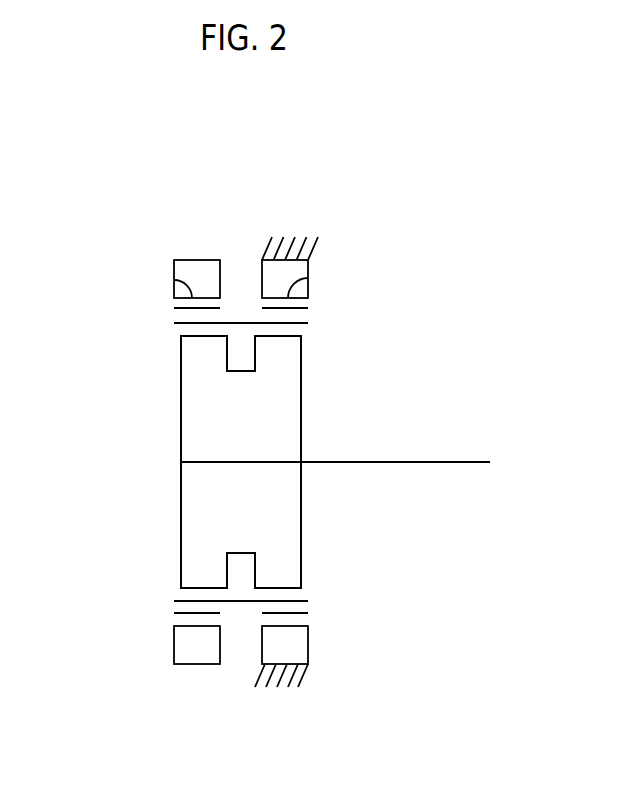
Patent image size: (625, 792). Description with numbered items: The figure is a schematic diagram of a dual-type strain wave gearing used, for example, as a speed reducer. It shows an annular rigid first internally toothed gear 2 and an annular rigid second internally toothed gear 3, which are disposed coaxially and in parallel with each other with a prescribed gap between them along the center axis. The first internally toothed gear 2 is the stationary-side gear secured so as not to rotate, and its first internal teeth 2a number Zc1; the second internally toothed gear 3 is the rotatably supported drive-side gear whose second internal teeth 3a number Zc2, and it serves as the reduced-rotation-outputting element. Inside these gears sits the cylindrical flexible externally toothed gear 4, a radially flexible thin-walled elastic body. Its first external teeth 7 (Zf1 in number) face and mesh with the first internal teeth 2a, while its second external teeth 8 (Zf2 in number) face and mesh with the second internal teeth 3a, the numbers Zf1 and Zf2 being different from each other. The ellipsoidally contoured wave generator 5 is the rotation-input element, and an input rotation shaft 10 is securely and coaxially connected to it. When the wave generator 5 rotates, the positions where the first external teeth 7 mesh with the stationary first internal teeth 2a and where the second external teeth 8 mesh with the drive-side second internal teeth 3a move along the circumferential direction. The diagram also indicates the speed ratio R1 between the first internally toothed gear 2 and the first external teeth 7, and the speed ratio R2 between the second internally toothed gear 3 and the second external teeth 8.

The first internally toothed gear 2 is at (318, 257).
The second internally toothed gear 3 is at (165, 260).
The first internal teeth 2a is at (308, 278).
The second internal teeth 3a is at (174, 280).
The externally toothed gear 4 is at (204, 334).
The wave generator 5 is at (196, 506).
The first external teeth 7 is at (294, 311).
The second external teeth 8 is at (184, 311).
The speed ratio R1 is at (324, 307).
The speed ratio R2 is at (158, 309).
The input rotation shaft 10 is at (375, 472).